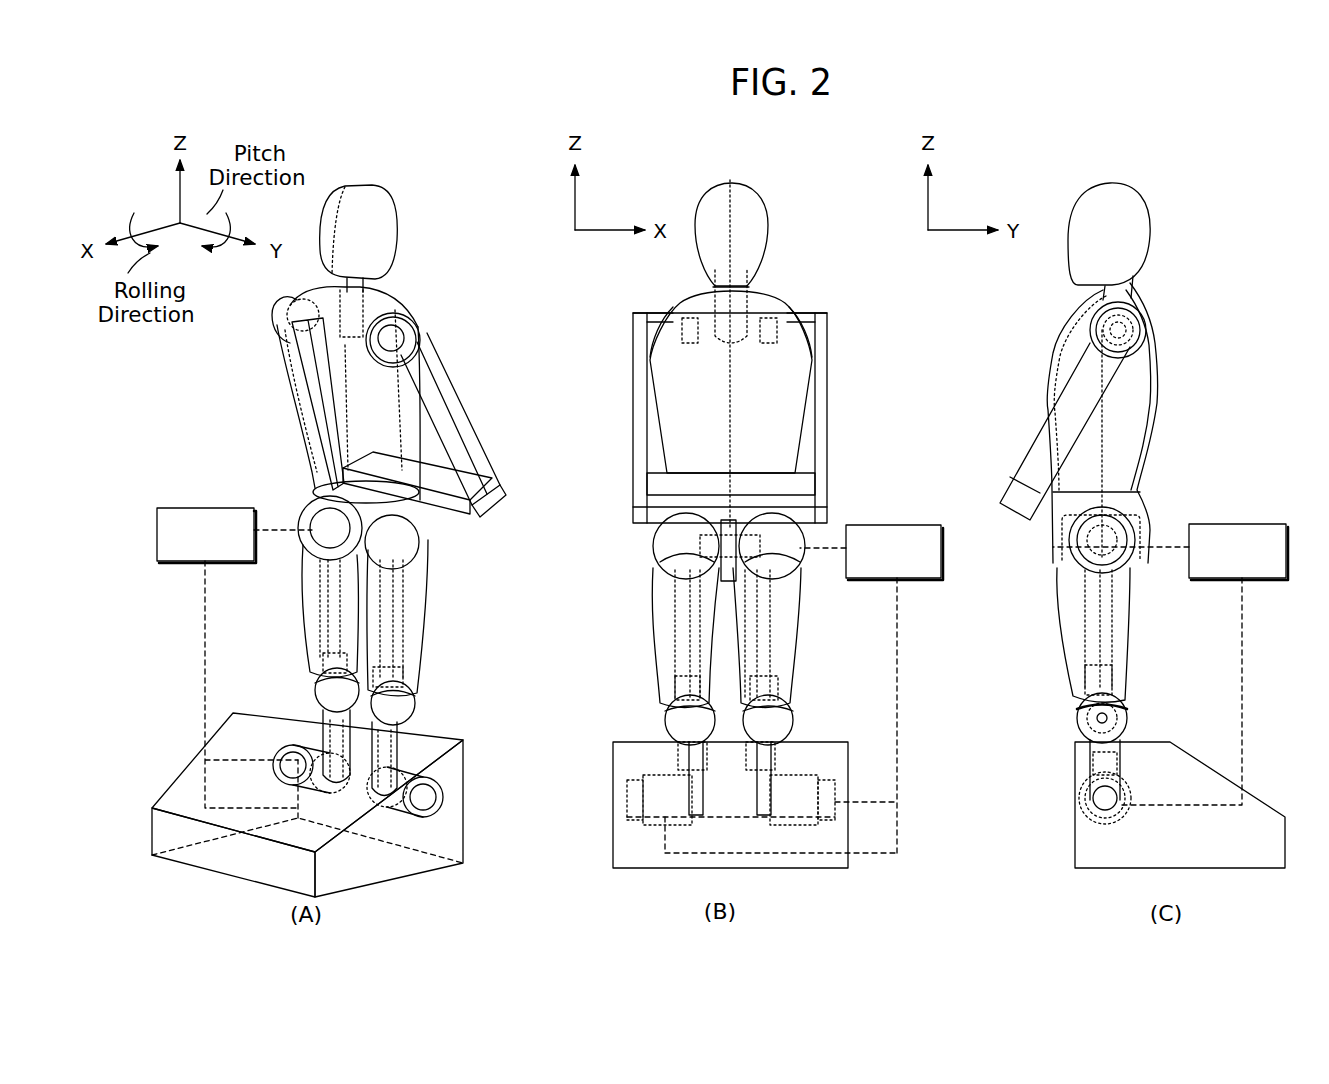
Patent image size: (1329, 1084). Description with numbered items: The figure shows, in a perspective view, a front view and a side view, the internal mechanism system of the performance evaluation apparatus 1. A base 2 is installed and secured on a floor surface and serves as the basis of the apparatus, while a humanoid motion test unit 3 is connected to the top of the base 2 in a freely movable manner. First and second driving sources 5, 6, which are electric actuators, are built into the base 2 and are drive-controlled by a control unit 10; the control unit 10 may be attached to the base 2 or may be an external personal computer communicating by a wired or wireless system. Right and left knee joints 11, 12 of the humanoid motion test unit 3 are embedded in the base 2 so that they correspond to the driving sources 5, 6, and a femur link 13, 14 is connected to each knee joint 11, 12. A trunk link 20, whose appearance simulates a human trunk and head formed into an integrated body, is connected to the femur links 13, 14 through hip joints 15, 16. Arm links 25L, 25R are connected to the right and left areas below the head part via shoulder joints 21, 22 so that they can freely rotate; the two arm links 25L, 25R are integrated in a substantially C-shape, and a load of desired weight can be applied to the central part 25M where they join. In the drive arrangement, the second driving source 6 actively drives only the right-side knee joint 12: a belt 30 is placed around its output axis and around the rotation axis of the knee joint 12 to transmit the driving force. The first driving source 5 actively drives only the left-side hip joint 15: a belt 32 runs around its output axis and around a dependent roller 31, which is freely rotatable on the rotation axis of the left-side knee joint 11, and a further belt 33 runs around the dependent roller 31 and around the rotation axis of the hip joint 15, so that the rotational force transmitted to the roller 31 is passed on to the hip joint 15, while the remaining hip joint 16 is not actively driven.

The performance evaluation apparatus 1 is at (216, 400).
The base 2 is at (178, 786).
The humanoid motion test unit 3 is at (428, 265).
The first driving source 5 is at (272, 736).
The second driving source 6 is at (447, 803).
The control unit 10 is at (197, 508).
The left-side knee joint 11 is at (322, 690).
The right-side knee joint 12 is at (415, 705).
The femur link 13 is at (303, 606).
The femur link 14 is at (408, 626).
The left-side hip joint 15 is at (305, 520).
The hip joint 16 is at (420, 538).
The trunk link 20 is at (298, 422).
The shoulder joint 21 is at (281, 308).
The shoulder joint 22 is at (404, 330).
The left arm link 25L is at (277, 350).
The right arm link 25R is at (460, 397).
The central part 25M is at (428, 487).
The belt 30 is at (432, 730).
The dependent roller 31 is at (797, 728).
The belt 32 is at (363, 768).
The belt 33 is at (303, 626).